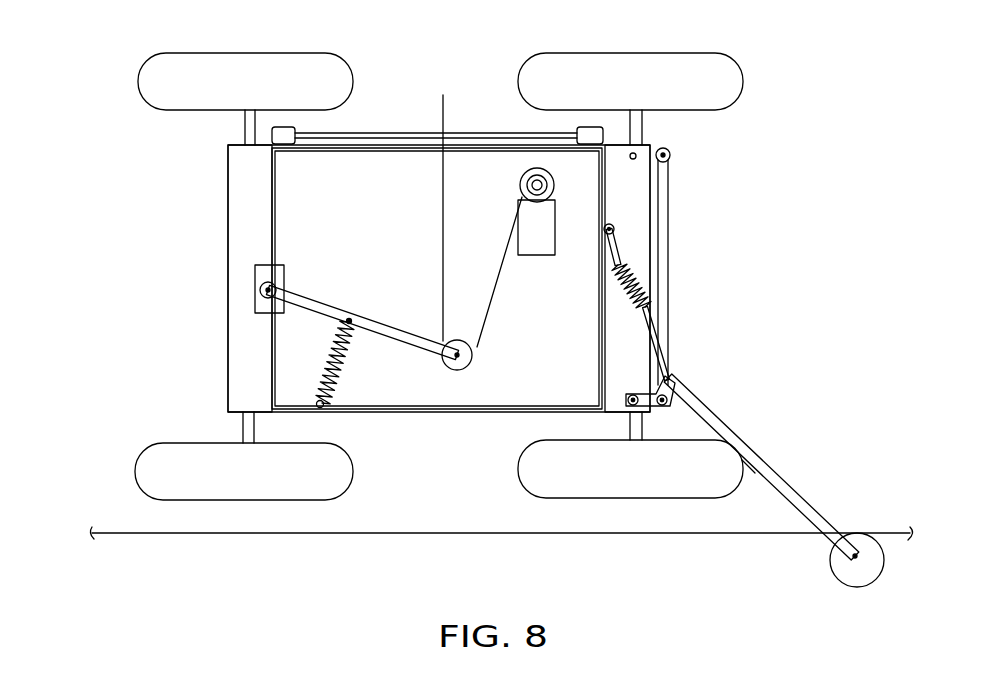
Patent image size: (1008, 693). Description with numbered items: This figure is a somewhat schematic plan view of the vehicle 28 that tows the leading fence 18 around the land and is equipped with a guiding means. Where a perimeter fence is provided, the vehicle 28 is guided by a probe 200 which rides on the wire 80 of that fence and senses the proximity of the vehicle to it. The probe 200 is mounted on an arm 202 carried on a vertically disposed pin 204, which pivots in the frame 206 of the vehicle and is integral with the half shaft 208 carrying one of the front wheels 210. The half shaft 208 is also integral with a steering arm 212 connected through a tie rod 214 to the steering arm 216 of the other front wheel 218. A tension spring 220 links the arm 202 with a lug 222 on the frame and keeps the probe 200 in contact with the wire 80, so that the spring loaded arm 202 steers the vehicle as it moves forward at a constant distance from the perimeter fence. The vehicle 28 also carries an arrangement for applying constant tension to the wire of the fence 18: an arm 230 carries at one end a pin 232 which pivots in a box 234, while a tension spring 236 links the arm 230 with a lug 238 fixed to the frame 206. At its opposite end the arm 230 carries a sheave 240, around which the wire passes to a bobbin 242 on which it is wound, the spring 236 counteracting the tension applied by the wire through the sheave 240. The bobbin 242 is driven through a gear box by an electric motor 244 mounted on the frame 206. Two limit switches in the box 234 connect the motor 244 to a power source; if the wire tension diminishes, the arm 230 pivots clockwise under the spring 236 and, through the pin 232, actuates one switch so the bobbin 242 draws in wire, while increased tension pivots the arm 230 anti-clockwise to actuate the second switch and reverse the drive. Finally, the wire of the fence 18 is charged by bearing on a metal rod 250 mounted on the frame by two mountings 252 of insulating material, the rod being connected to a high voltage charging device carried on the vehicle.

The leading fence 18 is at (443, 108).
The vehicle 28 is at (690, 202).
The wire 80 is at (318, 534).
The probe 200 is at (830, 559).
The arm 202 is at (700, 414).
The pin 204 is at (630, 398).
The frame 206 is at (466, 411).
The half shaft 208 is at (630, 424).
The front wheel 210 is at (733, 468).
The steering arm 212 is at (677, 400).
The tie rod 214 is at (668, 258).
The steering arm 216 is at (670, 155).
The front wheel 218 is at (738, 72).
The tension spring 220 is at (645, 297).
The lug 222 is at (614, 227).
The arm 230 is at (378, 323).
The pin 232 is at (281, 283).
The box 234 is at (255, 271).
The tension spring 236 is at (341, 372).
The lug 238 is at (318, 403).
The sheave 240 is at (472, 347).
The bobbin 242 is at (521, 185).
The electric motor 244 is at (545, 253).
The metal rod 250 is at (380, 134).
The mountings 252 is at (270, 136).